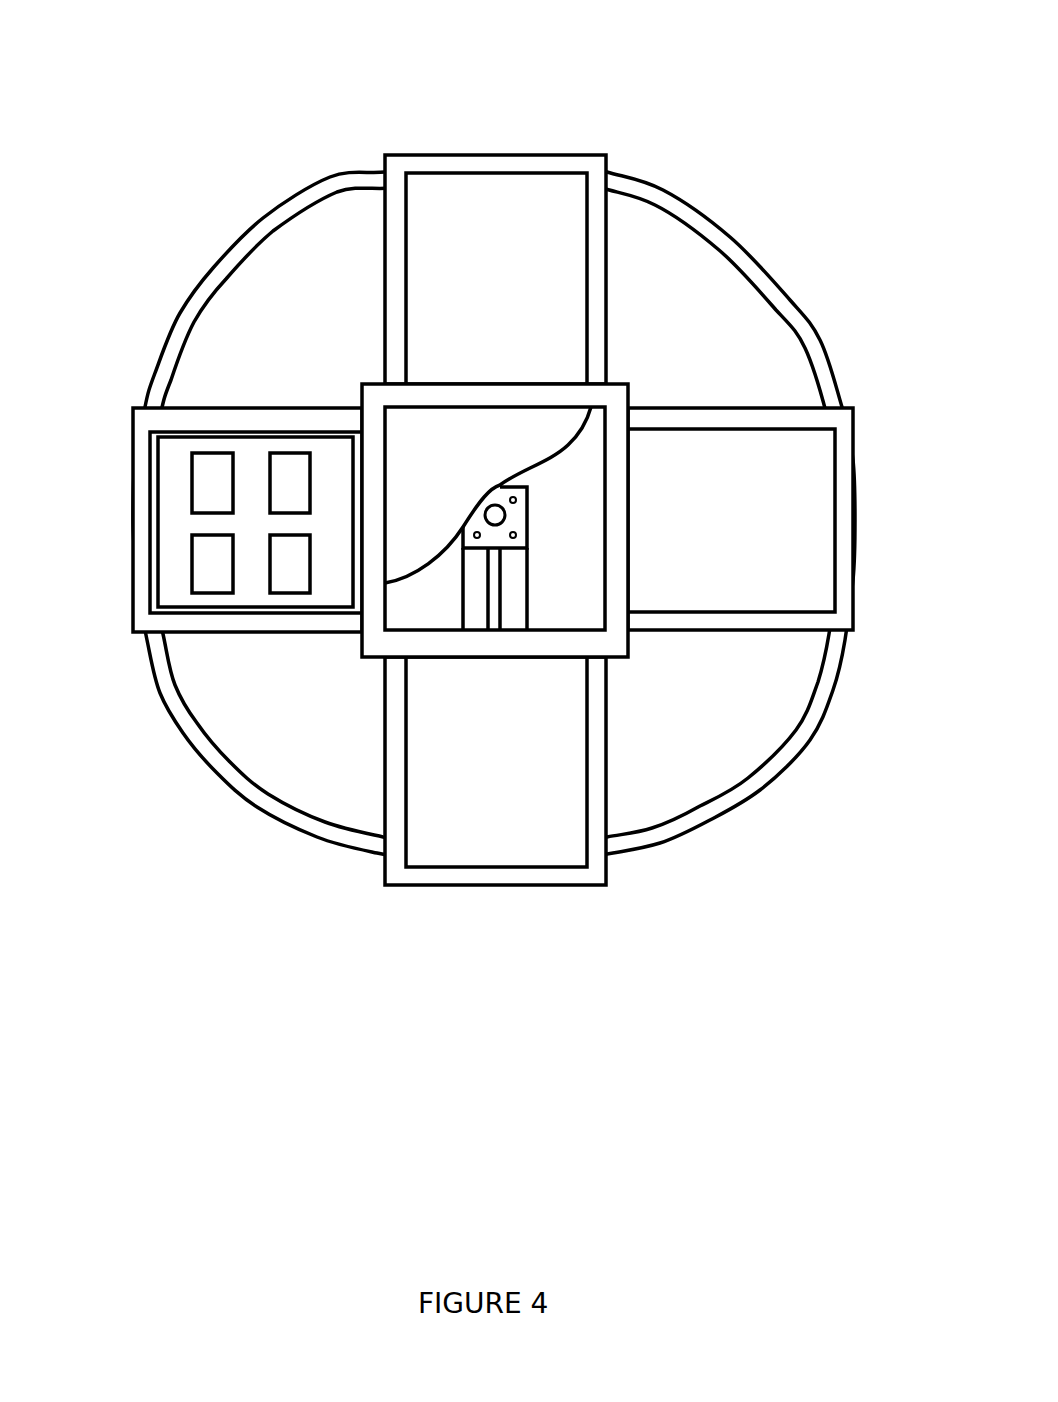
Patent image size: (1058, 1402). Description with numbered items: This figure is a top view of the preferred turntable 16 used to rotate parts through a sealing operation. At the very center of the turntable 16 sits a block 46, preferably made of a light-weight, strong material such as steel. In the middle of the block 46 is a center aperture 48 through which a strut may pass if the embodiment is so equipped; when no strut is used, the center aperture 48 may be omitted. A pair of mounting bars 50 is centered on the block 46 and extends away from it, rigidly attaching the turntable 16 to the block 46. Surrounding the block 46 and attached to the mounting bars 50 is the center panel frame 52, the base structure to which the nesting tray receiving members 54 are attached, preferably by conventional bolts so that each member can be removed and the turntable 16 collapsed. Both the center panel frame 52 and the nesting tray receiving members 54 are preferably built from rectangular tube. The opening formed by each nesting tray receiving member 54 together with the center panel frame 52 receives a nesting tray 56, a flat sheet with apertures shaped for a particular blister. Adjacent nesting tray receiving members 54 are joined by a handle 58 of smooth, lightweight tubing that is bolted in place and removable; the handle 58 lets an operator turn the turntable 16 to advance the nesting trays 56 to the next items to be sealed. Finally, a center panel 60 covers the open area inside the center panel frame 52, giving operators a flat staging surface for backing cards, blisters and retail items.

The turntable 16 is at (504, 489).
The block 46 is at (524, 510).
The center aperture 48 is at (495, 520).
The mounting bars 50 is at (480, 610).
The center panel frame 52 is at (373, 640).
The nesting tray receiving member 54 is at (522, 165).
The nesting tray 56 is at (250, 568).
The handle 58 is at (768, 772).
The center panel 60 is at (482, 448).